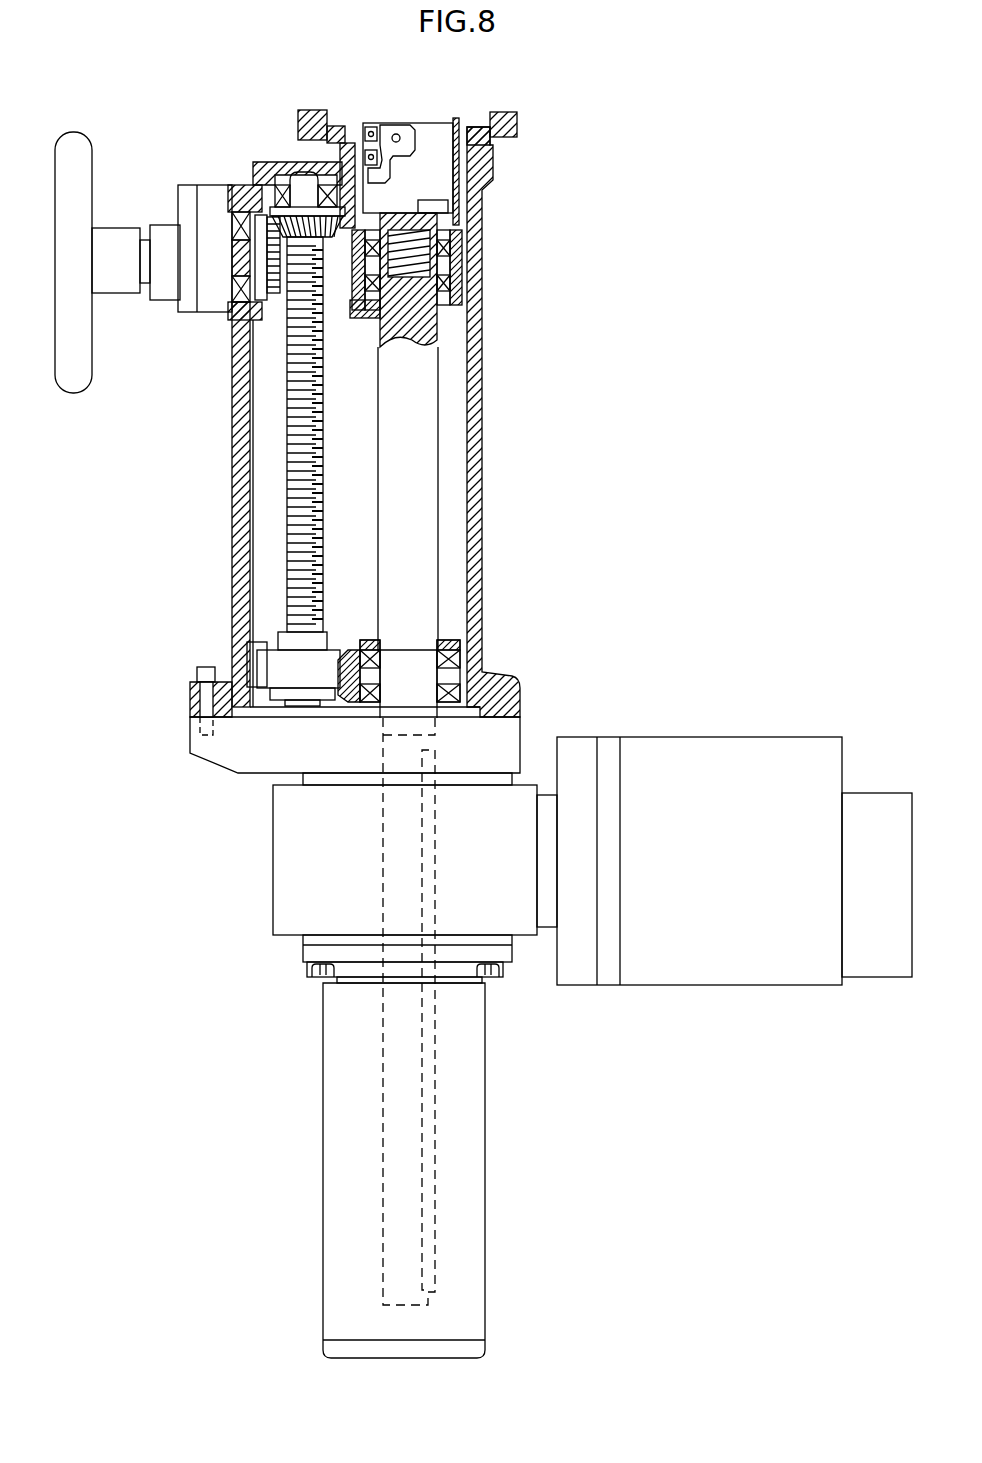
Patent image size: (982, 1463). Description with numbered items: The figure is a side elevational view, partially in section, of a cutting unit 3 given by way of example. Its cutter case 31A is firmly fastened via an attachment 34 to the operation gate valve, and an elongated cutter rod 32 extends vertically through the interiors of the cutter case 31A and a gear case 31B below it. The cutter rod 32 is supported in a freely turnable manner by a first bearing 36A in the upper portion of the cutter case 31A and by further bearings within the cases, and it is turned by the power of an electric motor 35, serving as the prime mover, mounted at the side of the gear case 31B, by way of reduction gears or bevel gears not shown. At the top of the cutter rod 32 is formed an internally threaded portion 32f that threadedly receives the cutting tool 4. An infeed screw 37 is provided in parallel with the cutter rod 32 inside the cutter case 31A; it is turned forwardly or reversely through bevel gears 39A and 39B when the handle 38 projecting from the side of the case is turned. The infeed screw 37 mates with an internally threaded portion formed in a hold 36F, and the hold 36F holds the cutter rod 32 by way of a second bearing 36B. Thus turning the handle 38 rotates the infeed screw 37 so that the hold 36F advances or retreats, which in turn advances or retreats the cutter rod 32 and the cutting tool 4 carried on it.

The cutting unit 3 is at (647, 314).
The cutting tool 4 is at (452, 122).
The cutter case 31A is at (482, 378).
The gear case 31B is at (298, 872).
The cutter rod 32 is at (425, 452).
The internally threaded portion 32f is at (412, 283).
The attachment 34 is at (517, 122).
The electric motor 35 is at (714, 758).
The first bearing 36A is at (462, 262).
The second bearing 36B is at (458, 652).
The hold 36F is at (283, 672).
The infeed screw 37 is at (290, 440).
The handle 38 is at (78, 378).
The bevel gear 39A is at (265, 300).
The bevel gear 39B is at (240, 195).